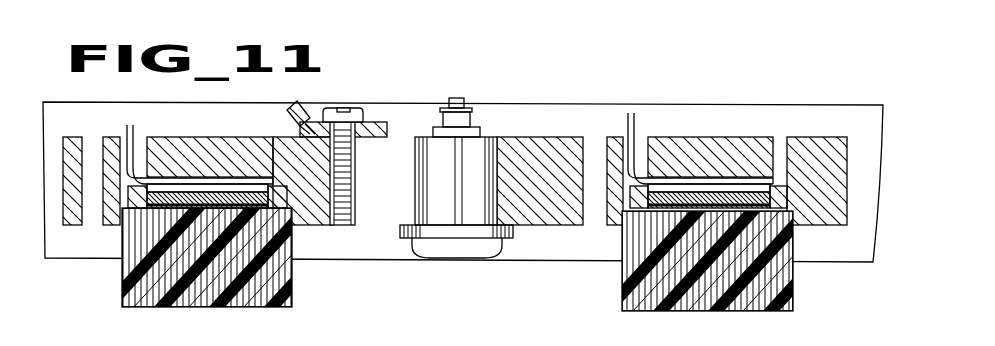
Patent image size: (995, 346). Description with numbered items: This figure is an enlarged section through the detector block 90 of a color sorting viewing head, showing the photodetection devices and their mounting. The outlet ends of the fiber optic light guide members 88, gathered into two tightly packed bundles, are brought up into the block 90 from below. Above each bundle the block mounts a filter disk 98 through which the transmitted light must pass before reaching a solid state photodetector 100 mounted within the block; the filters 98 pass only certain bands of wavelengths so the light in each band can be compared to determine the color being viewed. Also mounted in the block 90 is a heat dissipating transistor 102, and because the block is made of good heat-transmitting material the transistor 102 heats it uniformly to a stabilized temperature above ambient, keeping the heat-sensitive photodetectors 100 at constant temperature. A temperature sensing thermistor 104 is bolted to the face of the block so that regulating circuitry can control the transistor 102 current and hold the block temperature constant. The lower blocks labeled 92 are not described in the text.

The fiber optic light guide members 88 is at (206, 305).
The detector block 90 is at (515, 137).
The magnet block 92 is at (466, 273).
The filter disk 98 is at (143, 200).
The solid state photodetector 100 is at (173, 178).
The heat dissipating transistor 102 is at (427, 210).
The temperature sensing thermistor 104 is at (314, 122).